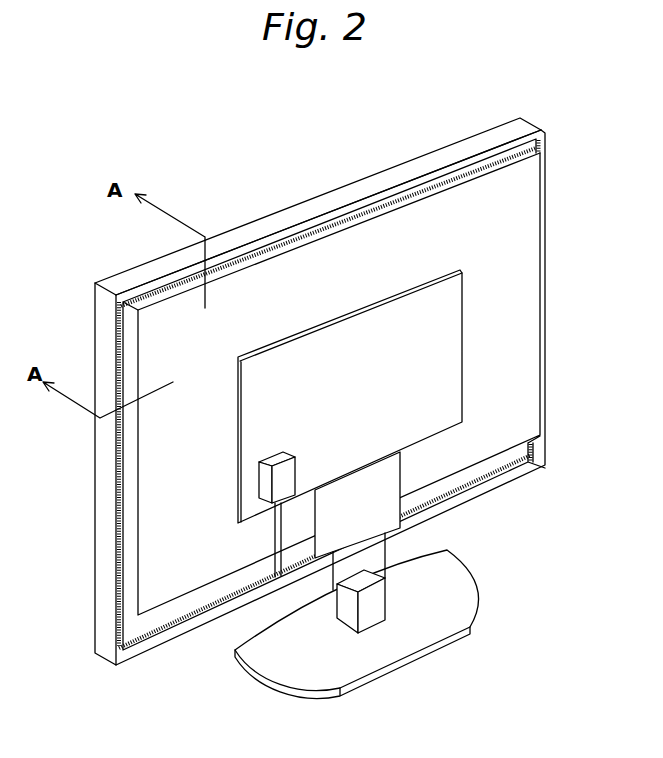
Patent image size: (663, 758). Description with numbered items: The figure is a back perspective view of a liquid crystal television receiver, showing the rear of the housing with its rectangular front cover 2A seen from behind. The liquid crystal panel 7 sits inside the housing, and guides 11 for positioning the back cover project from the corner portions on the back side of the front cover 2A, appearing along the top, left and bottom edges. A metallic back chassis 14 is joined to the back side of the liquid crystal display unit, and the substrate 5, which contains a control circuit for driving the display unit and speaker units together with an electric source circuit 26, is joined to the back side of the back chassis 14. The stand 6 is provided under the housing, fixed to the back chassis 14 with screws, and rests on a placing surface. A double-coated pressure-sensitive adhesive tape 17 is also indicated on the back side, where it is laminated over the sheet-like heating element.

The front cover 2A is at (300, 206).
The substrate 5 is at (462, 418).
The stand 6 is at (479, 606).
The liquid crystal panel 7 is at (546, 340).
The guides 11 is at (540, 133).
The back chassis 14 is at (400, 524).
The double-coated pressure-sensitive adhesive tape 17 is at (117, 340).
The electric source circuit 26 is at (289, 480).